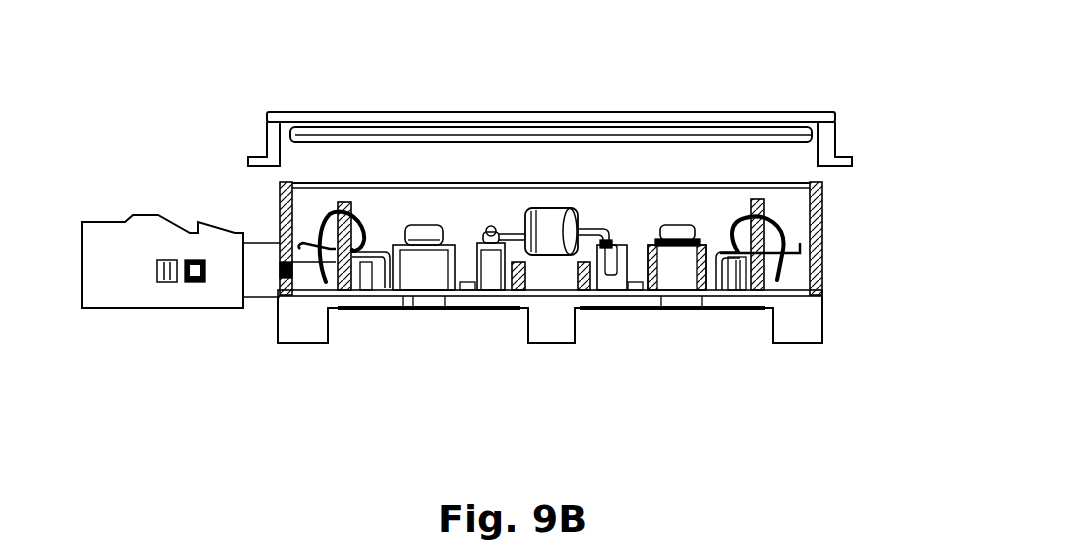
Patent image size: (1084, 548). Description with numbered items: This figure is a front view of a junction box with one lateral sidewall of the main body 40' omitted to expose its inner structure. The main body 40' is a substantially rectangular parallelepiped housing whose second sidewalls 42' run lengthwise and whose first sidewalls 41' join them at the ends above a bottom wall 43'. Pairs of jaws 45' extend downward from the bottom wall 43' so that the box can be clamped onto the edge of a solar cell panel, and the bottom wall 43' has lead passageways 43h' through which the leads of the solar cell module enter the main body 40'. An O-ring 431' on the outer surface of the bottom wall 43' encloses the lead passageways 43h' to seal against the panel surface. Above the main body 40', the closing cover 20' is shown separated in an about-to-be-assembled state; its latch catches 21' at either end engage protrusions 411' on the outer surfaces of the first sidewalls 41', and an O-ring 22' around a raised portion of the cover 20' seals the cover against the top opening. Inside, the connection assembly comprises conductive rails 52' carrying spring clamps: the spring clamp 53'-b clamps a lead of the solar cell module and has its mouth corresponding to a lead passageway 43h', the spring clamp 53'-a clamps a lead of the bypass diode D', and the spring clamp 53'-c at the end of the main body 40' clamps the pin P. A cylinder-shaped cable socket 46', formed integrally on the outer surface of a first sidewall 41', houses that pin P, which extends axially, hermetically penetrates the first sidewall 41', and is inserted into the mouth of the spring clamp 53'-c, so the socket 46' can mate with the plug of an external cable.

The closing cover 20' is at (551, 78).
The latch catch 21' is at (244, 114).
The O-ring 22' is at (867, 141).
The main body 40' is at (488, 178).
The first sidewall 41' is at (599, 270).
The second sidewall 42' is at (871, 170).
The protrusion 411' is at (604, 238).
The jaw 45' is at (556, 356).
The cable socket 46' is at (181, 318).
The pin P is at (303, 270).
The spring clamp 53'-c is at (345, 312).
The spring clamp 53'-b is at (424, 317).
The spring clamp 53'-a is at (475, 329).
The conductive rail 52' is at (533, 324).
The bypass diode D' is at (558, 318).
The O-ring 431' is at (622, 325).
The lead passageway 43h' is at (689, 320).
The bottom wall 43' is at (758, 307).